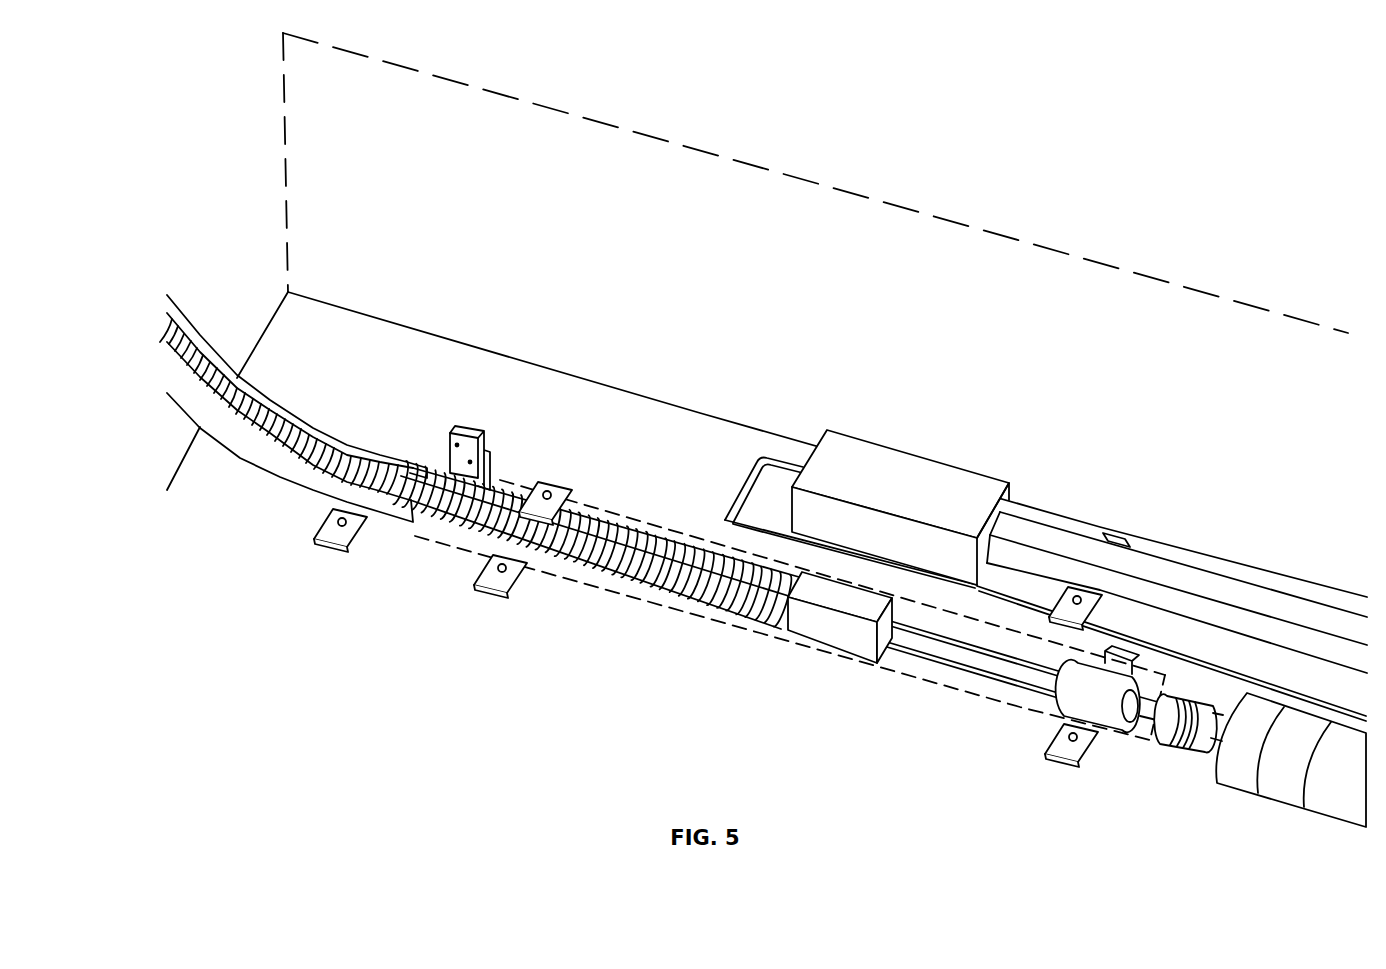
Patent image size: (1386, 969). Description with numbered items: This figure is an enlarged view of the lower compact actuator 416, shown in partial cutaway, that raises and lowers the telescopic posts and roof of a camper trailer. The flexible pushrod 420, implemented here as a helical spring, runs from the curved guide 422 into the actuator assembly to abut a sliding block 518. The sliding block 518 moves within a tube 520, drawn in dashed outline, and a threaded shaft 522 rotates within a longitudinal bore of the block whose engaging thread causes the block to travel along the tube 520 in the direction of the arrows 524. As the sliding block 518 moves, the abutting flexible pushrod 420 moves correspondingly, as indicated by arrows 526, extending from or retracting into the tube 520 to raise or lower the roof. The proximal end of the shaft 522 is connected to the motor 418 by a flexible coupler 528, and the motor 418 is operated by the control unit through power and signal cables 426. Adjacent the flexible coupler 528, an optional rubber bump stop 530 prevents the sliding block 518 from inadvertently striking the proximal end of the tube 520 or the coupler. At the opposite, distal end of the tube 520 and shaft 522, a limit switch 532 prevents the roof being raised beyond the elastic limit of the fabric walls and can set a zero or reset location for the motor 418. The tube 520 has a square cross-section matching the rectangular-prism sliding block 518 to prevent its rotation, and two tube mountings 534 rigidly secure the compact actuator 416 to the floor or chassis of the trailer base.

The compact actuator 416 is at (1035, 505).
The motor 418 is at (853, 431).
The flexible pushrod 420 is at (265, 437).
The curved guide 422 is at (202, 336).
The power and signal cables 426 is at (741, 478).
The sliding block 518 is at (822, 620).
The tube 520 is at (615, 508).
The threaded shaft 522 is at (606, 552).
The arrows 524 is at (812, 563).
The arrows 526 is at (252, 378).
The flexible coupler 528 is at (1176, 757).
The rubber bump stop 530 is at (1105, 710).
The limit switch 532 is at (473, 426).
The tube mountings 534 is at (549, 478).